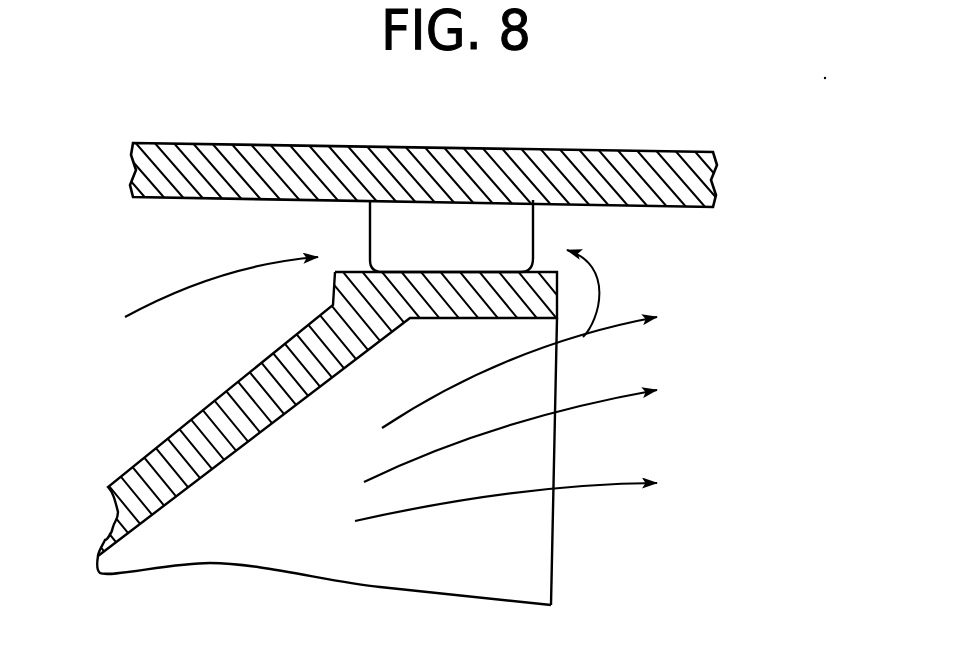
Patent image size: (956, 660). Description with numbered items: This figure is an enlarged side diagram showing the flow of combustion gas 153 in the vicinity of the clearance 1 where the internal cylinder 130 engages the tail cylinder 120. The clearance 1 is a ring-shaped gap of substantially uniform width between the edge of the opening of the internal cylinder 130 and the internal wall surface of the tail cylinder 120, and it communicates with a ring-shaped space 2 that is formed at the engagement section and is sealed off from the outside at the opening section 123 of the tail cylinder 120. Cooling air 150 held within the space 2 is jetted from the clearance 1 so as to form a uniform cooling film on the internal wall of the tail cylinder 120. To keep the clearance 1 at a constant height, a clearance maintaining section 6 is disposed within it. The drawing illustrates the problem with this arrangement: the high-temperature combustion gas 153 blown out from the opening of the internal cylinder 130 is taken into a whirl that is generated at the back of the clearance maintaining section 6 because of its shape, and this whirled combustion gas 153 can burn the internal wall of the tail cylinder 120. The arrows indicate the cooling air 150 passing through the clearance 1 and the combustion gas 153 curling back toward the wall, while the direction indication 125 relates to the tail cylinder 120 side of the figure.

The clearance 1 is at (558, 235).
The space 2 is at (215, 228).
The clearance maintaining section 6 is at (445, 233).
The tail cylinder 120 is at (592, 166).
The opening section of the tail cylinder 123 is at (551, 566).
The movement direction 125 is at (778, 188).
The internal cylinder 130 is at (153, 473).
The cooling air 150 is at (190, 292).
The combustion gas 153 is at (635, 325).